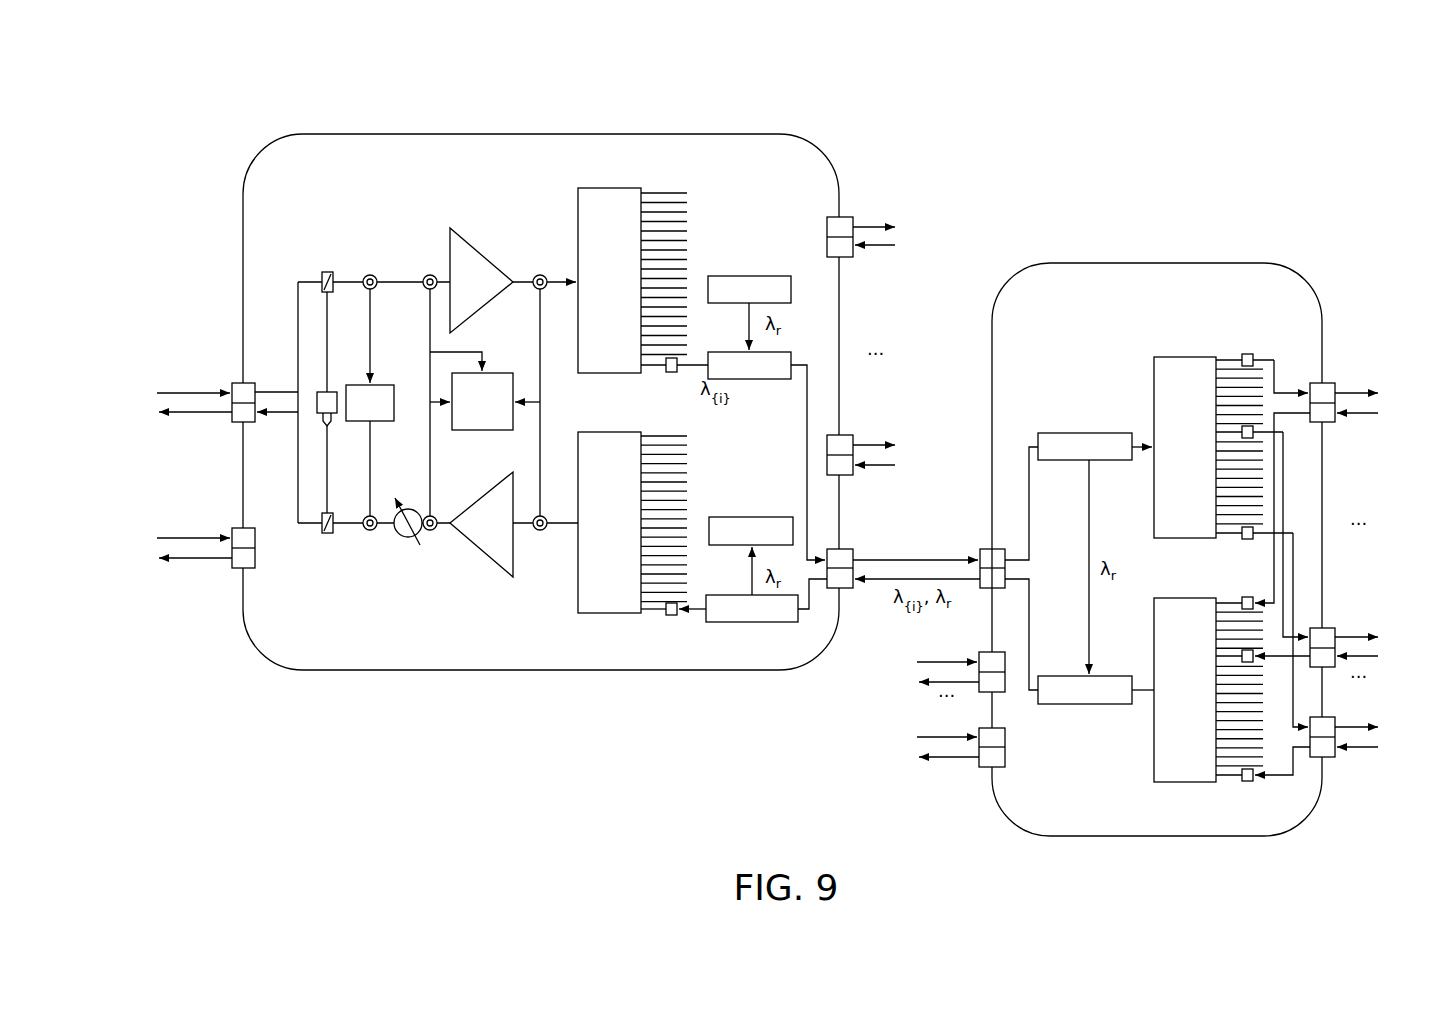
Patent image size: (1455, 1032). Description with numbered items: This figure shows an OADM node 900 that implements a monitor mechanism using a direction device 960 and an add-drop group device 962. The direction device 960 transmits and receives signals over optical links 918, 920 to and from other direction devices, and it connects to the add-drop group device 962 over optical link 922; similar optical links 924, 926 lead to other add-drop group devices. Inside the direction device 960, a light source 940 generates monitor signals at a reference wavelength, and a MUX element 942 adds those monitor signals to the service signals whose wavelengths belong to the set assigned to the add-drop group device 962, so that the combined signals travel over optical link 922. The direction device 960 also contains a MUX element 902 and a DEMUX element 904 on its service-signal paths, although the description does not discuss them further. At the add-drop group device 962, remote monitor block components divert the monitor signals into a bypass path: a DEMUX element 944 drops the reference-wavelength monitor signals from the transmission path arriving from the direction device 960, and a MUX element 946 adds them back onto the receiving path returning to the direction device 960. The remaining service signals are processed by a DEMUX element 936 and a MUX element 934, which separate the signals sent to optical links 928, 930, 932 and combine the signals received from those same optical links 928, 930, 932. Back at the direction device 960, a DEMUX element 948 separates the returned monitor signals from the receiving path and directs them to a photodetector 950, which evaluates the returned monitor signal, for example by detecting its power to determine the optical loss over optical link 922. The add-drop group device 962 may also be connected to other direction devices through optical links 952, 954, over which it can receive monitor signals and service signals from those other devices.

The OADM node 900 is at (222, 76).
The multiplexer 902 is at (578, 606).
The demultiplexer 904 is at (577, 252).
The optical link 918 is at (155, 528).
The optical link 920 is at (155, 383).
The optical link 922 is at (855, 545).
The optical link 924 is at (898, 435).
The optical link 926 is at (898, 217).
The optical link 928 is at (1381, 717).
The optical link 930 is at (1381, 628).
The optical link 932 is at (1381, 383).
The MUX element 934 is at (1154, 775).
The DEMUX element 936 is at (1152, 368).
The light source 940 is at (750, 275).
The MUX element 942 is at (758, 381).
The DEMUX element 944 is at (1085, 432).
The MUX element 946 is at (1048, 704).
The DEMUX element 948 is at (752, 622).
The photodetector 950 is at (752, 515).
The optical link 952 is at (917, 652).
The optical link 954 is at (917, 728).
The direction device 960 is at (540, 134).
The add-drop group device 962 is at (1157, 263).